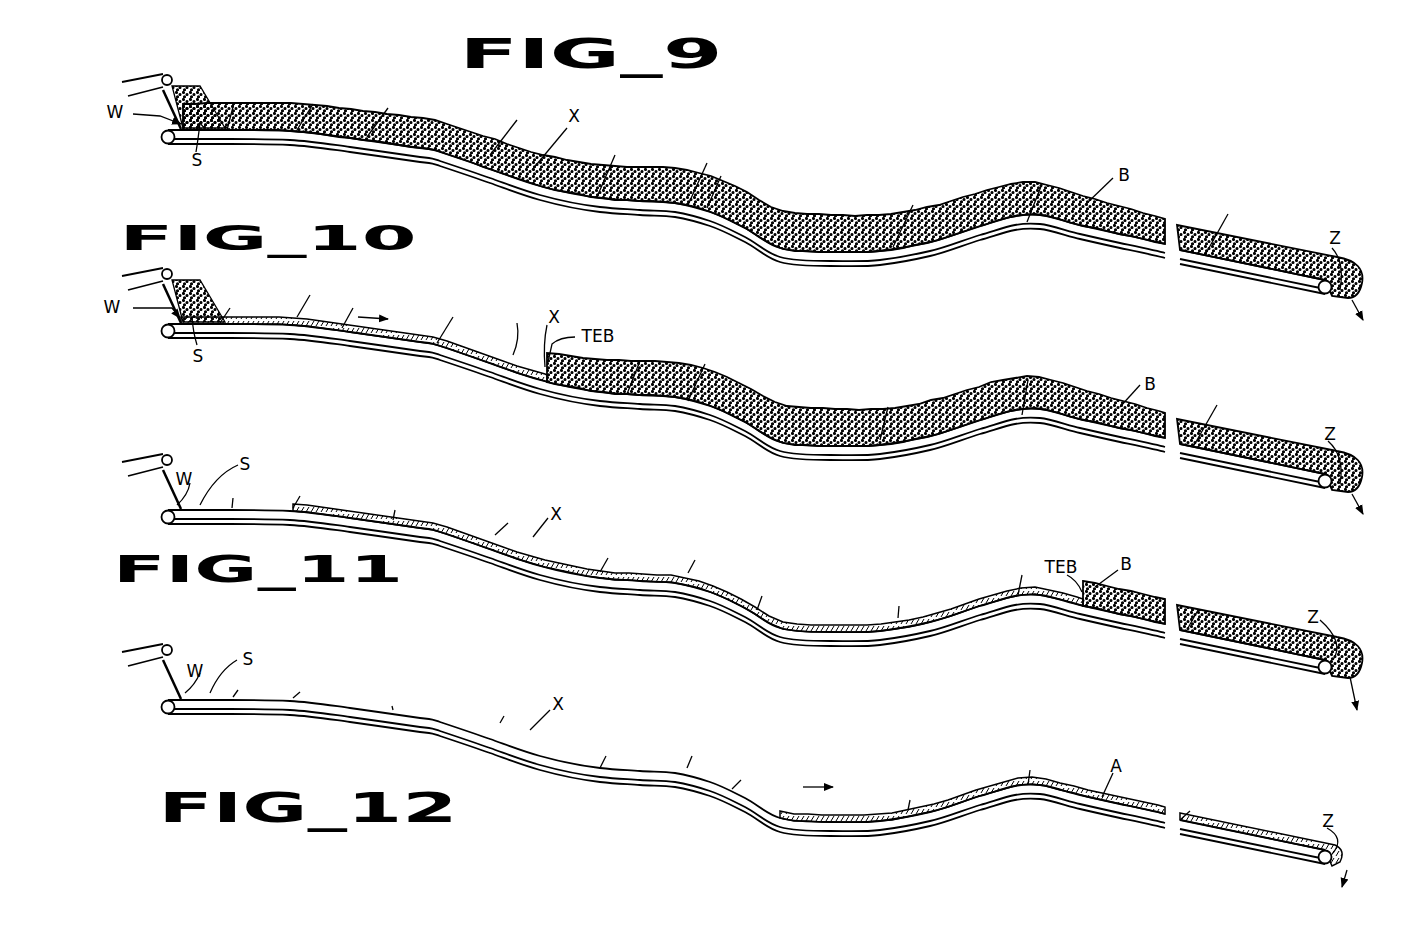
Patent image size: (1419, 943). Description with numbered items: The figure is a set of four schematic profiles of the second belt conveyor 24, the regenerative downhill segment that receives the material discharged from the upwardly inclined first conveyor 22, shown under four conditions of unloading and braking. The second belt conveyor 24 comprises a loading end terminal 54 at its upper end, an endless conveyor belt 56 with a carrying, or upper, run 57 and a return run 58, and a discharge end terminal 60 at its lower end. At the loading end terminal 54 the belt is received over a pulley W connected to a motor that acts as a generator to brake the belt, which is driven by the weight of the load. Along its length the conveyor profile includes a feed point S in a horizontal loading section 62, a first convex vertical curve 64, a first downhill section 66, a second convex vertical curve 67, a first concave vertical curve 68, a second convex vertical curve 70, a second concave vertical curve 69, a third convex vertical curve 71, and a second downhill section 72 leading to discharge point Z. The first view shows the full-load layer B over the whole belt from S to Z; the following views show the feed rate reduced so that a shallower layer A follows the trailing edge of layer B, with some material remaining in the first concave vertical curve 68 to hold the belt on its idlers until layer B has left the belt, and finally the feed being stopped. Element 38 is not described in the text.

In FIG. 9, the first conveyor 22 is at (170, 66).
In FIG. 10, the first conveyor 22 is at (131, 270).
In FIG. 11, the first conveyor 22 is at (171, 443).
In FIG. 12, the first conveyor 22 is at (172, 640).
In FIG. 9, the second belt conveyor 24 is at (340, 154).
In FIG. 10, the second belt conveyor 24 is at (746, 399).
In FIG. 11, the second belt conveyor 24 is at (746, 585).
In FIG. 12, the second belt conveyor 24 is at (746, 775).
In FIG. 9, the feed roll 38 is at (177, 73).
In FIG. 10, the feed roll 38 is at (195, 270).
In FIG. 11, the feed roll 38 is at (192, 457).
In FIG. 12, the feed roll 38 is at (195, 646).
In FIG. 9, the loading end terminal 54 is at (162, 131).
In FIG. 10, the loading end terminal 54 is at (141, 331).
In FIG. 11, the loading end terminal 54 is at (147, 527).
In FIG. 12, the loading end terminal 54 is at (146, 714).
In FIG. 9, the endless conveyor belt 56 is at (415, 163).
In FIG. 10, the endless conveyor belt 56 is at (746, 387).
In FIG. 11, the endless conveyor belt 56 is at (746, 580).
In FIG. 12, the endless conveyor belt 56 is at (746, 769).
In FIG. 9, the carrying run 57 is at (721, 176).
In FIG. 10, the carrying run 57 is at (458, 323).
In FIG. 11, the carrying run 57 is at (768, 587).
In FIG. 12, the carrying run 57 is at (751, 771).
In FIG. 9, the return run 58 is at (698, 228).
In FIG. 10, the return run 58 is at (746, 413).
In FIG. 11, the return run 58 is at (746, 599).
In FIG. 12, the return run 58 is at (746, 789).
In FIG. 9, the discharge end terminal 60 is at (1327, 300).
In FIG. 10, the discharge end terminal 60 is at (1316, 501).
In FIG. 11, the discharge end terminal 60 is at (1318, 689).
In FIG. 12, the discharge end terminal 60 is at (1311, 877).
In FIG. 9, the horizontal loading section 62 is at (234, 103).
In FIG. 10, the horizontal loading section 62 is at (236, 307).
In FIG. 11, the horizontal loading section 62 is at (237, 491).
In FIG. 12, the horizontal loading section 62 is at (252, 682).
In FIG. 9, the first convex vertical curve 64 is at (313, 104).
In FIG. 10, the first convex vertical curve 64 is at (315, 297).
In FIG. 11, the first convex vertical curve 64 is at (310, 490).
In FIG. 12, the first convex vertical curve 64 is at (314, 685).
In FIG. 9, the first downhill section 66 is at (388, 108).
In FIG. 10, the first downhill section 66 is at (360, 309).
In FIG. 11, the first downhill section 66 is at (405, 502).
In FIG. 12, the first downhill section 66 is at (392, 697).
In FIG. 9, the second convex vertical curve 67 is at (517, 120).
In FIG. 10, the second convex vertical curve 67 is at (506, 332).
In FIG. 11, the second convex vertical curve 67 is at (514, 513).
In FIG. 12, the second convex vertical curve 67 is at (515, 707).
In FIG. 9, the first concave vertical curve 68 is at (615, 155).
In FIG. 10, the first concave vertical curve 68 is at (655, 364).
In FIG. 11, the first concave vertical curve 68 is at (622, 549).
In FIG. 12, the first concave vertical curve 68 is at (615, 747).
In FIG. 9, the second concave vertical curve 69 is at (913, 205).
In FIG. 10, the second concave vertical curve 69 is at (890, 408).
In FIG. 11, the second concave vertical curve 69 is at (903, 597).
In FIG. 12, the second concave vertical curve 69 is at (913, 790).
In FIG. 9, the second convex vertical curve 70 is at (707, 163).
In FIG. 10, the second convex vertical curve 70 is at (717, 369).
In FIG. 11, the second convex vertical curve 70 is at (707, 552).
In FIG. 12, the second convex vertical curve 70 is at (704, 748).
In FIG. 9, the third convex vertical curve 71 is at (1041, 192).
In FIG. 10, the third convex vertical curve 71 is at (1027, 386).
In FIG. 11, the third convex vertical curve 71 is at (1032, 565).
In FIG. 12, the third convex vertical curve 71 is at (1036, 761).
In FIG. 9, the second downhill section 72 is at (1230, 226).
In FIG. 10, the second downhill section 72 is at (1217, 419).
In FIG. 11, the second downhill section 72 is at (1207, 602).
In FIG. 12, the second downhill section 72 is at (1202, 802).